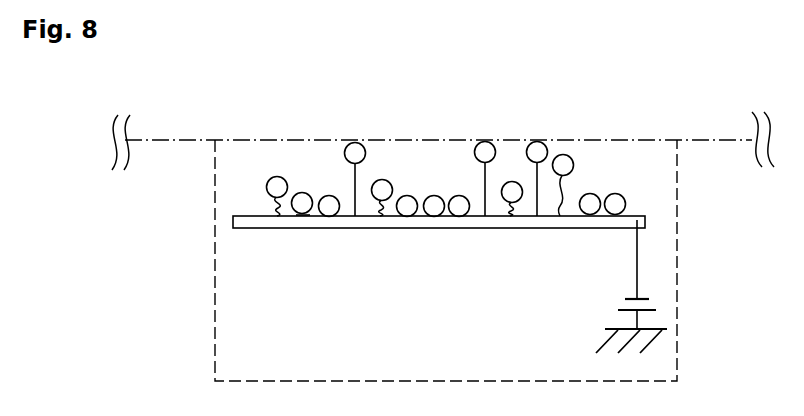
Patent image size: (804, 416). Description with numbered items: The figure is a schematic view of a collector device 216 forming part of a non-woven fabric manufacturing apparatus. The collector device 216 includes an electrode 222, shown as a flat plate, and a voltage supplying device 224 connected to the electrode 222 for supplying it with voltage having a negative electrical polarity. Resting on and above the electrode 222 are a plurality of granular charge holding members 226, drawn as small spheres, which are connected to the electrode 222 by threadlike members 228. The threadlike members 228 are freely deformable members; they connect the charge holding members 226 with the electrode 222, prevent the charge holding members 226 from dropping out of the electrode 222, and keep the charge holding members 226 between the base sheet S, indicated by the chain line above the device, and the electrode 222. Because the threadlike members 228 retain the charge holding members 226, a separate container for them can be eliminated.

The base sheet S is at (697, 138).
The collector device 216 is at (680, 290).
The electrode 222 is at (427, 229).
The voltage supplying device 224 is at (626, 310).
The granular charge holding members 226 is at (382, 186).
The threadlike members 228 is at (272, 205).